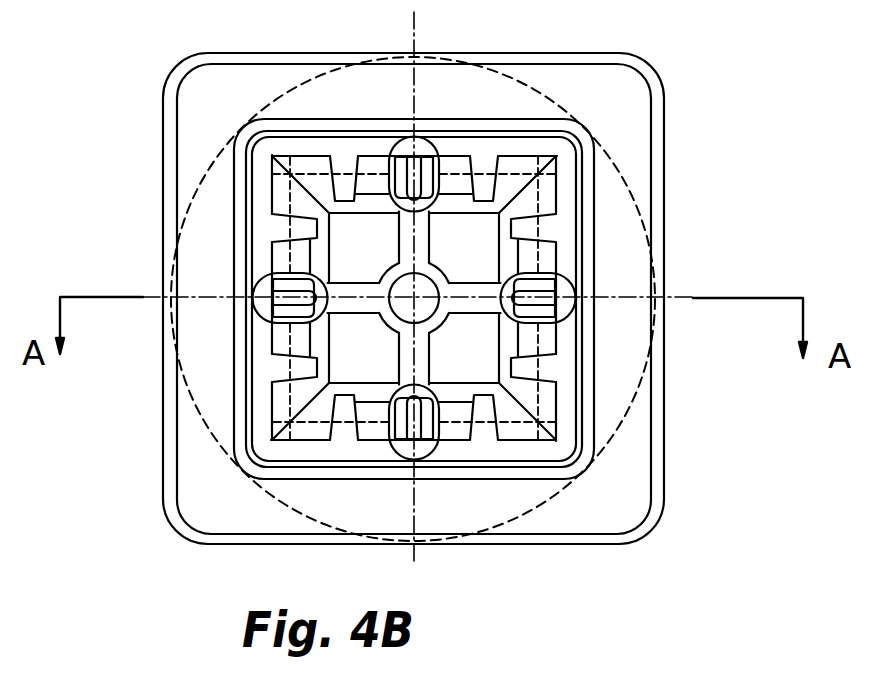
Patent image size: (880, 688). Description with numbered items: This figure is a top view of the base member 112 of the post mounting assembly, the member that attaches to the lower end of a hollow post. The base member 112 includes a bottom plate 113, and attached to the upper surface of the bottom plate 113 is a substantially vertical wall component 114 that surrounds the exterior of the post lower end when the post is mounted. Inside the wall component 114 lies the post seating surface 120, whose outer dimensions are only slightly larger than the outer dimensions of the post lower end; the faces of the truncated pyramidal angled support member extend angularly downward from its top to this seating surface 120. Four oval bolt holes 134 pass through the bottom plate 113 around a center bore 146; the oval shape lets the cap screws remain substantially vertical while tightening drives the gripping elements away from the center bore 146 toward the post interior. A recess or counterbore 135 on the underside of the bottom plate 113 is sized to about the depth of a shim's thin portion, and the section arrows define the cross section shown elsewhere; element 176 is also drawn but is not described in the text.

The base member 112 is at (149, 406).
The bottom plate 113 is at (210, 98).
The vertical wall component 114 is at (265, 465).
The post seating surface 120 is at (260, 227).
The oval bolt hole 134 is at (427, 136).
The recess or counterbore 135 is at (627, 178).
The center bore 146 is at (418, 298).
The stem block 176 is at (450, 423).